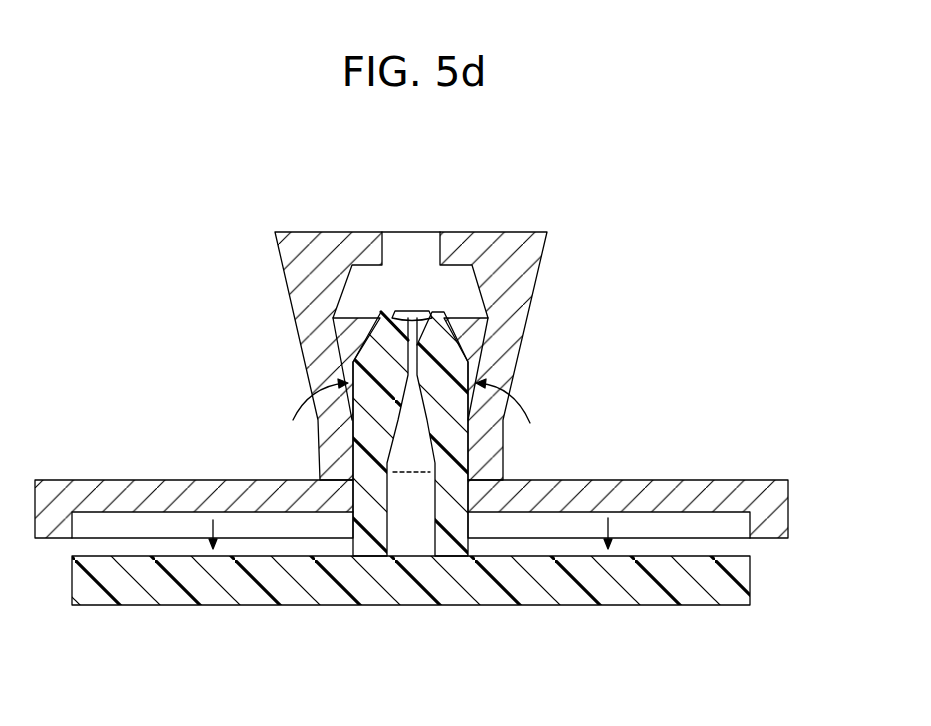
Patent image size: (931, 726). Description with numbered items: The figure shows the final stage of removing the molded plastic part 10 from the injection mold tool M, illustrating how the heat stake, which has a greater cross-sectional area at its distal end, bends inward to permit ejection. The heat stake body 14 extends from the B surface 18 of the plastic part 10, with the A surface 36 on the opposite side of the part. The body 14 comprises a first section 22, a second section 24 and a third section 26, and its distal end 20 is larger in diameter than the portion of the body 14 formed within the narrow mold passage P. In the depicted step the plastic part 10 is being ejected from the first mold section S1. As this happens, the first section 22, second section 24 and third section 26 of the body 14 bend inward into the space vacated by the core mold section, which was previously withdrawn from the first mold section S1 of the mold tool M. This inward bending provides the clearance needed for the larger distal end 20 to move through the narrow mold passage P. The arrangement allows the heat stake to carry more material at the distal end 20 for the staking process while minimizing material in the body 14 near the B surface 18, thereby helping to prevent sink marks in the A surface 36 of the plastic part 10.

The plastic part 10 is at (411, 629).
The body 14 is at (503, 442).
The B surface 18 is at (637, 556).
The distal end 20 is at (404, 363).
The first section 22 is at (380, 330).
The second section 24 is at (438, 342).
The third section 26 is at (413, 310).
The A surface 36 is at (177, 606).
The mold tool M is at (588, 316).
The mold passage P is at (363, 485).
The first mold section S1 is at (744, 506).